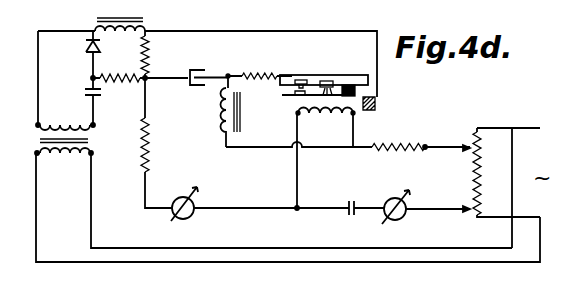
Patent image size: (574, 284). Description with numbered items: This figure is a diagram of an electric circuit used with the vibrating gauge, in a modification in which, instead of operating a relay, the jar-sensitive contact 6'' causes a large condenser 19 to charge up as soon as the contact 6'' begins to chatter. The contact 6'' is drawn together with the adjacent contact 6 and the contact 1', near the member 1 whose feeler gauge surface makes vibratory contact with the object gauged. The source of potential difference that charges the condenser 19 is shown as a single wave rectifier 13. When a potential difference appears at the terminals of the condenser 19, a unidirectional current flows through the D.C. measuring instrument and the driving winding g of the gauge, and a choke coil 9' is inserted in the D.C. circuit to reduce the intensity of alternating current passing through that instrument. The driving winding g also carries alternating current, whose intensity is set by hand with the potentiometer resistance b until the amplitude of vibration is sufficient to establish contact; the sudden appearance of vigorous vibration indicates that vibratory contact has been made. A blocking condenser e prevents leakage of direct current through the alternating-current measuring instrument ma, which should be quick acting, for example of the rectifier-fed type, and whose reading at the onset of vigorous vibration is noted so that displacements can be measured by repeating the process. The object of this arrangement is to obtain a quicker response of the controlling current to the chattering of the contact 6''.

The single wave rectifier 13 is at (88, 44).
The large condenser 19 is at (198, 86).
The choke coil 9' is at (256, 110).
The contact 1' is at (291, 88).
The member 1 is at (305, 109).
The contact member 6 is at (321, 66).
The jar-sensitive contact 6'' is at (327, 77).
The driving winding g is at (345, 115).
The potentiometer resistance b is at (470, 177).
The blocking condenser e is at (350, 207).
The current-measuring instrument ma is at (200, 190).